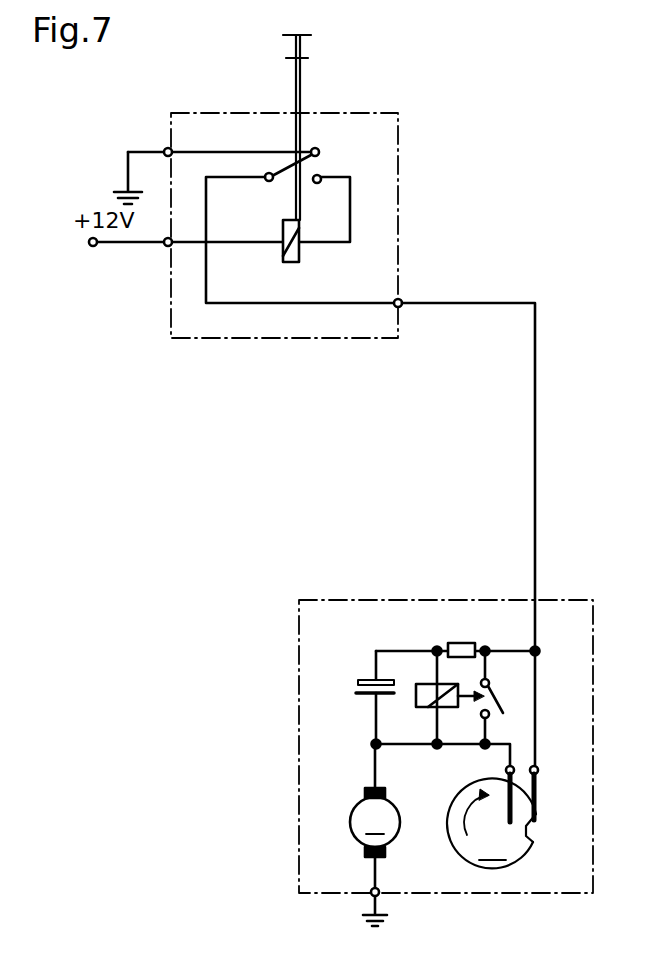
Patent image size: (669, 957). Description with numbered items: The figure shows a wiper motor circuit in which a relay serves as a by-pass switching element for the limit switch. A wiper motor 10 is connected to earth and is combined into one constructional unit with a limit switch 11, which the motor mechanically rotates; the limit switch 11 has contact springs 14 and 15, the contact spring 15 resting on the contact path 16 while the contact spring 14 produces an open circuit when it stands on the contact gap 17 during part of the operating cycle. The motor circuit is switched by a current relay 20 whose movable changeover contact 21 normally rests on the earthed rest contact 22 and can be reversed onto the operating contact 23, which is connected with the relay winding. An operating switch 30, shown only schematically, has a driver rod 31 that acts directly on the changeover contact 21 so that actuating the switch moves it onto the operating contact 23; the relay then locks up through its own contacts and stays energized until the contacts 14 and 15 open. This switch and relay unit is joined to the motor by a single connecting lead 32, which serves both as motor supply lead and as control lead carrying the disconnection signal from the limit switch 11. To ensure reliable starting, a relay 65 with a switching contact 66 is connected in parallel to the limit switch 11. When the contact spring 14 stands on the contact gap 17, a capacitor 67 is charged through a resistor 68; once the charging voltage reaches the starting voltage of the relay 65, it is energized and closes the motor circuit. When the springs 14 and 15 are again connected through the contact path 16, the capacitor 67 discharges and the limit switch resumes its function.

The wiper motor 10 is at (357, 836).
The limit switch 11 is at (506, 850).
The contact spring 14 is at (506, 790).
The contact spring 15 is at (537, 796).
The contact path 16 is at (491, 823).
The contact gap 17 is at (535, 838).
The current relay 20 is at (300, 252).
The changeover contact 21 is at (307, 165).
The rest contact 22 is at (316, 148).
The operating contact 23 is at (320, 186).
The operating switch 30 is at (316, 76).
The driver rod 31 is at (296, 98).
The connecting lead 32 is at (537, 422).
The relay 65 is at (428, 707).
The switching contact 66 is at (493, 690).
The capacitor 67 is at (365, 695).
The resistor 68 is at (465, 643).